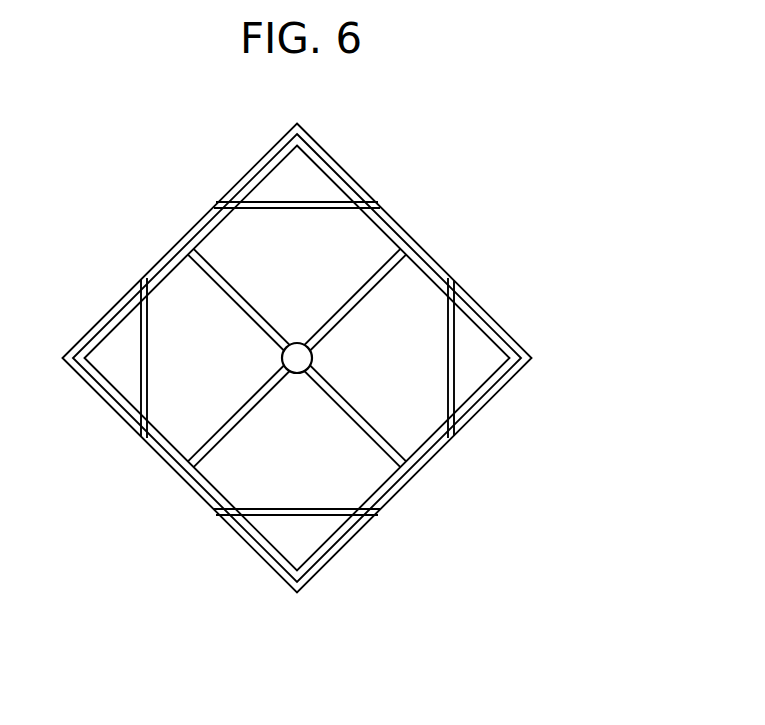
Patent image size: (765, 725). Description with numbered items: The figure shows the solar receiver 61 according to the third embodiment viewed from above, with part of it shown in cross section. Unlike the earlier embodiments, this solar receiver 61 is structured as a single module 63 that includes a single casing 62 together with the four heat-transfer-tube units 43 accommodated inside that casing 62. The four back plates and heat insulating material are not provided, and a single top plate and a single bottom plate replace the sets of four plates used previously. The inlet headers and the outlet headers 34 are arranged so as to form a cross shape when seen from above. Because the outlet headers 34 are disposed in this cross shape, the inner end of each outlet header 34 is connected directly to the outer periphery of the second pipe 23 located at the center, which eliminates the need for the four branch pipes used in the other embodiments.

The solar receiver 61 is at (217, 176).
The casing 62 is at (405, 222).
The module 63 is at (568, 188).
The heat-transfer-tube unit 43 is at (382, 292).
The outlet header 34 is at (232, 303).
The second pipe 23 is at (300, 342).